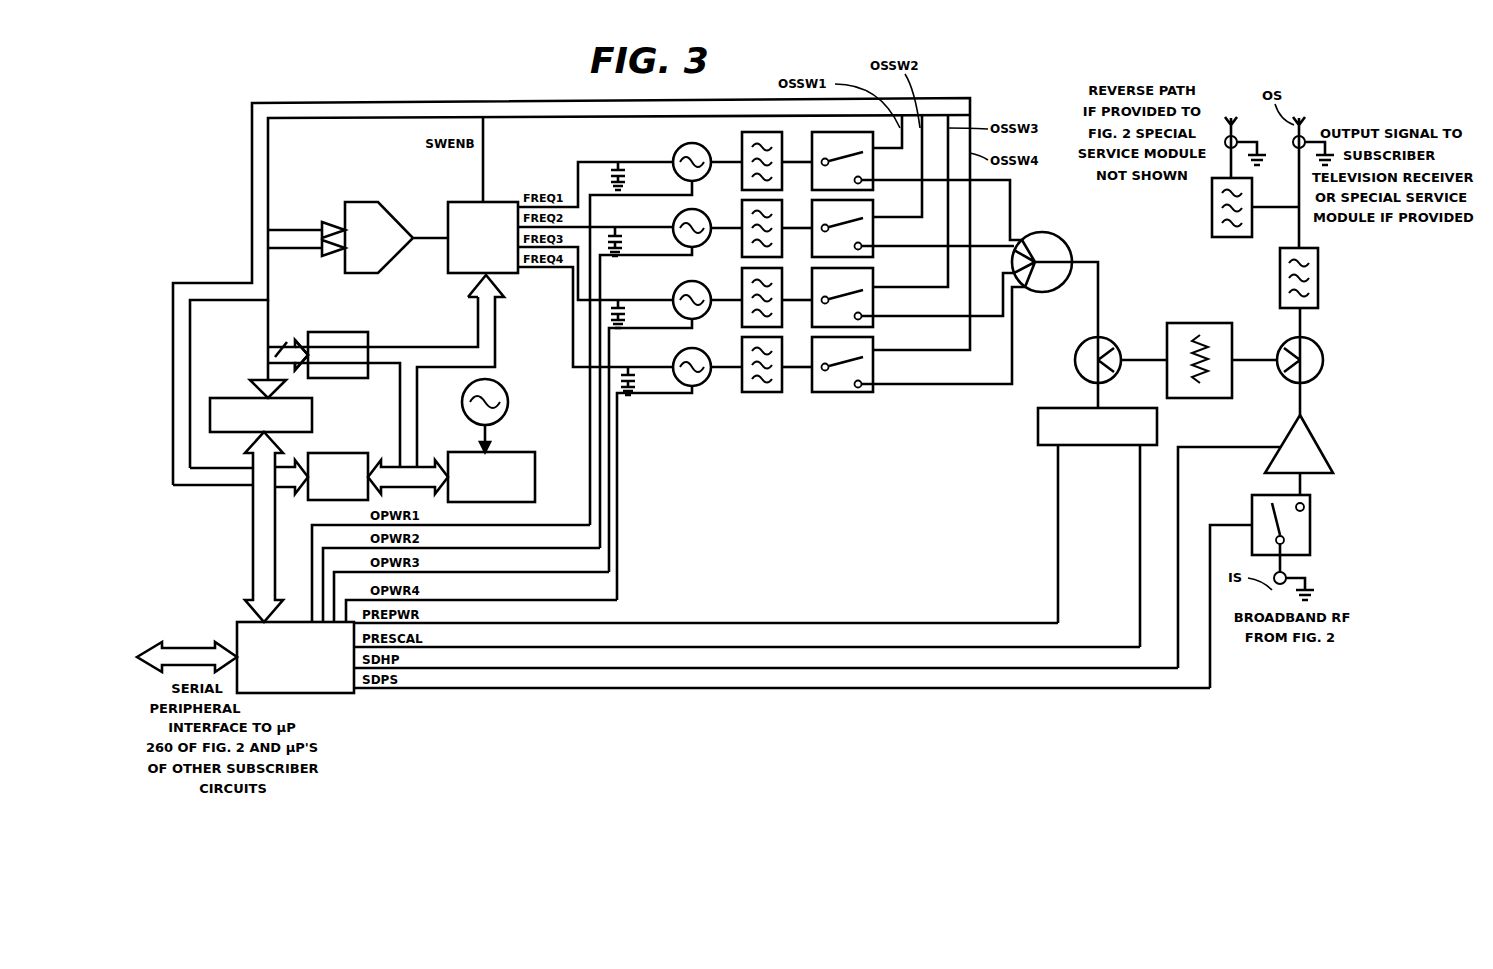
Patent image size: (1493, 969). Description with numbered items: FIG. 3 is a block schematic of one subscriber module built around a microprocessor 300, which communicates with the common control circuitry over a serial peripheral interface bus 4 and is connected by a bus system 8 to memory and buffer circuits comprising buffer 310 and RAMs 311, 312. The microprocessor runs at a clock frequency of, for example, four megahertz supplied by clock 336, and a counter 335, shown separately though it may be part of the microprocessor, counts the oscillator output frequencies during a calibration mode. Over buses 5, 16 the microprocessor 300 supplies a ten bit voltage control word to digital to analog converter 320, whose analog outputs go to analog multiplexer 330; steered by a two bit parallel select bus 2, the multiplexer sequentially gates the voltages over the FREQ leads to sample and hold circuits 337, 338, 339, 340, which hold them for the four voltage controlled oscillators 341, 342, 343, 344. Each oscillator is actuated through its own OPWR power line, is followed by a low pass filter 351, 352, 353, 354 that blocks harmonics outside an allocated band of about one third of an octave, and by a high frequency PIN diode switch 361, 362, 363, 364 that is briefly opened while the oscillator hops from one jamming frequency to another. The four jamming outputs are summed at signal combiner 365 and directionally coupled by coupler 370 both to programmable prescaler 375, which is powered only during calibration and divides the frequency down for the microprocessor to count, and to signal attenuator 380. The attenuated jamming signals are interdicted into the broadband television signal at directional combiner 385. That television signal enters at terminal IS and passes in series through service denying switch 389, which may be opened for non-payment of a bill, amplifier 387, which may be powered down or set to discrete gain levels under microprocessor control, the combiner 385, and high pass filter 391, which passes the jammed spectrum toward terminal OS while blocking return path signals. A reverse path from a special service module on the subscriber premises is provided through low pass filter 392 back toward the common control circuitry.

The control bus to analog mux 2 is at (475, 328).
The serial peripheral interface bus 4 is at (175, 673).
The D/A input bus 5 is at (243, 178).
The microprocessor data bus 8 is at (245, 553).
The D/A input bus 16 is at (243, 277).
The microprocessor 300 is at (345, 695).
The buffer 310 is at (222, 398).
The RAM 311 is at (322, 332).
The RAM 312 is at (330, 453).
The digital to analog converter 320 is at (362, 202).
The analog multiplexer 330 is at (463, 202).
The counter 335 is at (535, 488).
The clock 336 is at (508, 404).
The sample and hold circuit 337 is at (605, 168).
The sample and hold circuit 338 is at (607, 238).
The sample and hold circuit 339 is at (609, 310).
The sample and hold circuit 340 is at (636, 392).
The voltage controlled oscillator 341 is at (676, 176).
The voltage controlled oscillator 342 is at (676, 242).
The voltage controlled oscillator 343 is at (678, 311).
The voltage controlled oscillator 344 is at (703, 385).
The low pass filter 351 is at (741, 152).
The low pass filter 352 is at (741, 218).
The low pass filter 353 is at (741, 285).
The low pass filter 354 is at (741, 350).
The PIN diode switch 361 is at (873, 167).
The PIN diode switch 362 is at (878, 237).
The PIN diode switch 363 is at (880, 305).
The PIN diode switch 364 is at (885, 372).
The signal combiner 365 is at (1042, 232).
The directional coupler 370 is at (1078, 355).
The programmable prescaler 375 is at (1038, 432).
The signal attenuator 380 is at (1205, 323).
The directional combiner 385 is at (1323, 372).
The amplifier 387 is at (1293, 428).
The service denying switch 389 is at (1252, 500).
The high pass filter 391 is at (1318, 289).
The low pass filter 392 is at (1212, 216).